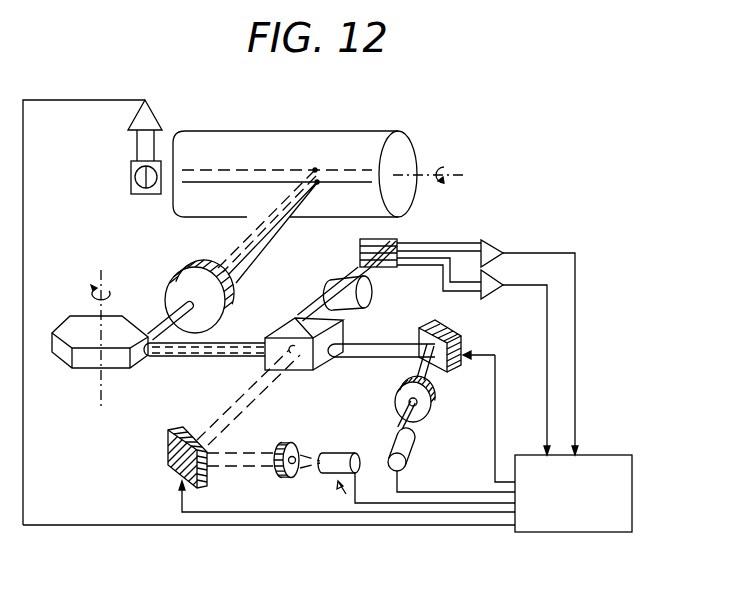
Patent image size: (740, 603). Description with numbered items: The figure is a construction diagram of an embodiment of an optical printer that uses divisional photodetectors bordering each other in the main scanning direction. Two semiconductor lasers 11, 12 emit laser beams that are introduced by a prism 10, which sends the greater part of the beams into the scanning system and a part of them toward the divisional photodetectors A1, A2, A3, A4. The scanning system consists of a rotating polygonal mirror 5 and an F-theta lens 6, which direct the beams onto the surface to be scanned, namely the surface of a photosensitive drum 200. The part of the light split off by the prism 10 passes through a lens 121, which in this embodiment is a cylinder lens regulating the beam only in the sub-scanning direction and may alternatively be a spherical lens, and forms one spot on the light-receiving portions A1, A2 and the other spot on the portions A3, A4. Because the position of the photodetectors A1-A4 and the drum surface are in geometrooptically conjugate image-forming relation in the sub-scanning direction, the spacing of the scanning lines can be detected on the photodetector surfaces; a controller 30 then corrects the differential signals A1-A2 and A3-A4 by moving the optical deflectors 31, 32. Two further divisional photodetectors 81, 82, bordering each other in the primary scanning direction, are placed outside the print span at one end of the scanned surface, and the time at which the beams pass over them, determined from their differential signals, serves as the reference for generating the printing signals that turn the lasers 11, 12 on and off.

The photosensitive drum 200 is at (335, 131).
The photodetector 81 is at (135, 181).
The photodetector 82 is at (152, 194).
The F-theta lens 6 is at (234, 299).
The rotating polygonal mirror 5 is at (113, 370).
The prism 10 is at (323, 363).
The lens 121 is at (333, 282).
The divisional photodetector A1 is at (392, 240).
The divisional photodetector A2 is at (397, 250).
The divisional photodetector A3 is at (396, 262).
The divisional photodetector A4 is at (386, 268).
The optical deflector 32 is at (452, 331).
The semiconductor laser 12 is at (412, 453).
The optical deflector 31 is at (167, 447).
The semiconductor laser 11 is at (339, 452).
The controller 30 is at (632, 472).